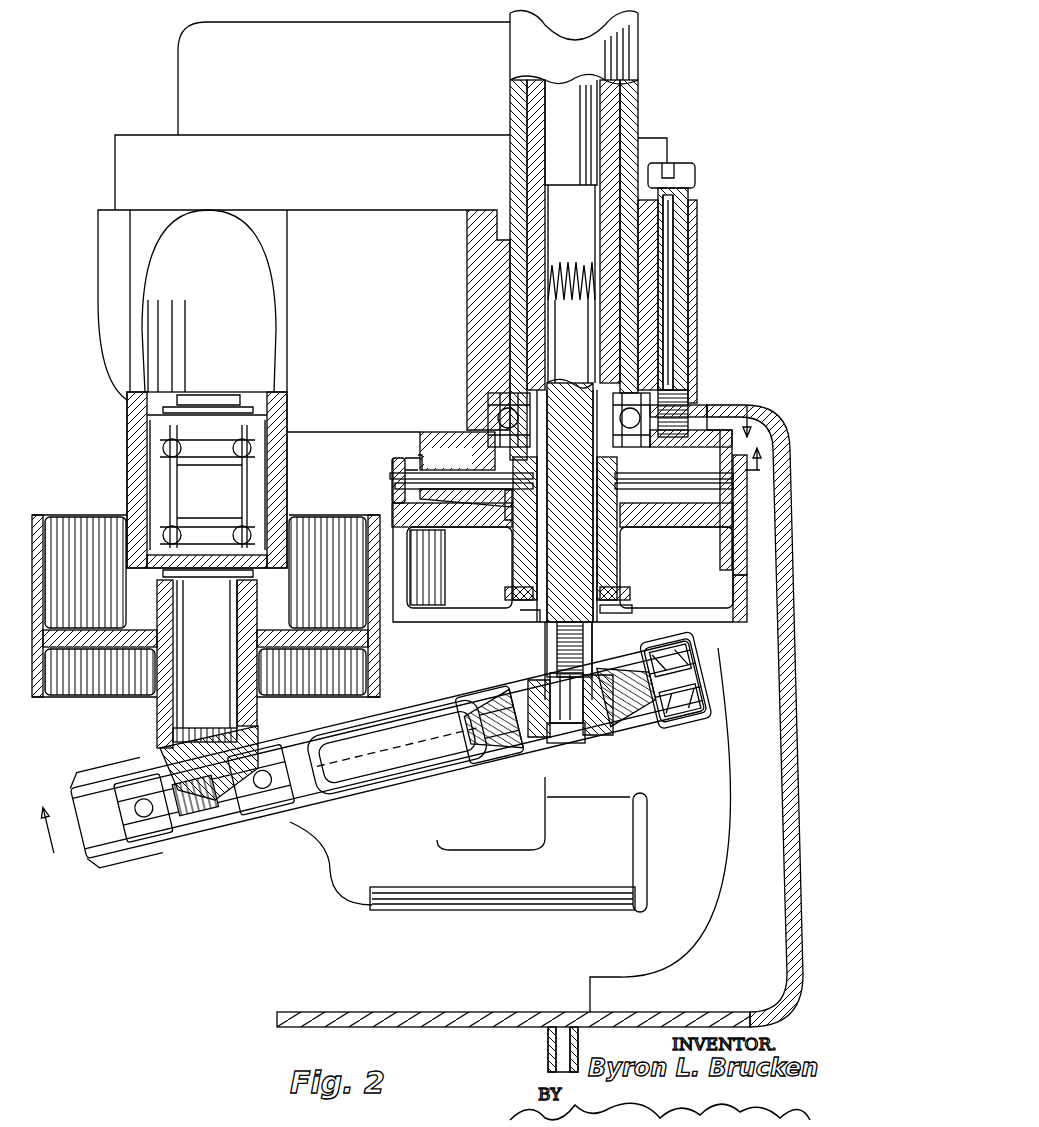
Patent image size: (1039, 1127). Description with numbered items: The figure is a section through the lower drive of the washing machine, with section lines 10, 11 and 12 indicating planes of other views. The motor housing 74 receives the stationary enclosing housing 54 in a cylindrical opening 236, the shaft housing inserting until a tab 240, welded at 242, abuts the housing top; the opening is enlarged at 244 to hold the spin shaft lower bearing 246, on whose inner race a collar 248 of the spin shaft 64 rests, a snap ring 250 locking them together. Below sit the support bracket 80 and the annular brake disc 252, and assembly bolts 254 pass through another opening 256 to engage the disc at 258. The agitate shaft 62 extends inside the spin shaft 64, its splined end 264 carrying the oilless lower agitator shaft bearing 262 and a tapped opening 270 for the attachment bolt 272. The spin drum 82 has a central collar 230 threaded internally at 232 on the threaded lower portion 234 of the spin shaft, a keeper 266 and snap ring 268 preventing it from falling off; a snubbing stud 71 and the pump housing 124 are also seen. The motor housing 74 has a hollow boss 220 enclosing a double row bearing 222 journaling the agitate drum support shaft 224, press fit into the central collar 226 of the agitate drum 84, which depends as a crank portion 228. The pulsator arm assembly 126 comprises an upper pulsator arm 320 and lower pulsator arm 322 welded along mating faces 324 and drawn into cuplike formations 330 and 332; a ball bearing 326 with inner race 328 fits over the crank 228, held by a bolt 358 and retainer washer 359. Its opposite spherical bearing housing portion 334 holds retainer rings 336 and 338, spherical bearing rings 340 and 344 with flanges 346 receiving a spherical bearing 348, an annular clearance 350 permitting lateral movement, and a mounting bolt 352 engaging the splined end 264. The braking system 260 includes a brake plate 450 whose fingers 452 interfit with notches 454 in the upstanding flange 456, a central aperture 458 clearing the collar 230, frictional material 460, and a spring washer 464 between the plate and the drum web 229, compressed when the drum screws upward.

The section line 10 is at (373, 485).
The section line 11 is at (753, 485).
The section line 12 is at (713, 657).
The stationary enclosing housing 54 is at (628, 140).
The agitate shaft 62 is at (590, 105).
The spin shaft 64 is at (612, 125).
The snubbing stud 71 is at (548, 1040).
The motor housing 74 is at (100, 314).
The support bracket 80 is at (775, 435).
The spin drum 82 is at (747, 590).
The agitate drum 84 is at (40, 515).
The pump housing 124 is at (380, 912).
The pulsator arm assembly 126 is at (112, 904).
The hollow boss 220 is at (128, 428).
The double row bearing 222 is at (255, 470).
The agitate drum support shaft 224 is at (228, 502).
The central collar 226 is at (250, 608).
The pulsator arm attachment portion 228 is at (178, 780).
The web 229 is at (452, 522).
The central collar 230 is at (618, 560).
The internal threads 232 is at (618, 530).
The threaded lower portion 234 is at (630, 608).
The cylindrical opening 236 is at (482, 240).
The tab 240 is at (694, 196).
The weld 242 is at (662, 162).
The enlarged opening portion 244 is at (490, 398).
The spin shaft lower bearing 246 is at (497, 414).
The collar 248 is at (640, 395).
The snap ring 250 is at (528, 440).
The brake disc 252 is at (420, 453).
The assembly bolts 254 is at (668, 296).
The opening 256 is at (675, 262).
The threaded engagement 258 is at (688, 430).
The braking system 260 is at (735, 571).
The lower agitator shaft bearing 262 is at (530, 615).
The splined end 264 is at (595, 640).
The keeper 266 is at (630, 590).
The snap ring 268 is at (505, 598).
The tapped opening 270 is at (552, 640).
The pulsator arm assembly attachment bolt 272 is at (592, 735).
The upper pulsator arm 320 is at (96, 792).
The lower pulsator arm 322 is at (140, 855).
The mating faces 324 is at (290, 790).
The ball bearing 326 is at (262, 810).
The inner race 328 is at (160, 830).
The cuplike formation 330 is at (400, 790).
The cuplike formation 332 is at (357, 730).
The spherical bearing housing portion 334 is at (520, 770).
The upper bearing retainer ring 336 is at (650, 640).
The lower bearing retainer ring 338 is at (672, 720).
The upper spherical bearing ring 340 is at (505, 690).
The lower spherical bearing ring 344 is at (530, 768).
The spherical flange 346 is at (590, 740).
The spherical bearing 348 is at (598, 750).
The annular clearance 350 is at (680, 705).
The mounting bolt 352 is at (530, 690).
The bolt 358 is at (215, 820).
The retainer washer 359 is at (197, 840).
The brake plate 450 is at (735, 530).
The radially directed fingers 452 is at (392, 476).
The notches 454 is at (400, 487).
The upstanding flange 456 is at (398, 460).
The central aperture 458 is at (515, 545).
The frictional material 460 is at (482, 470).
The spring washer 464 is at (436, 498).